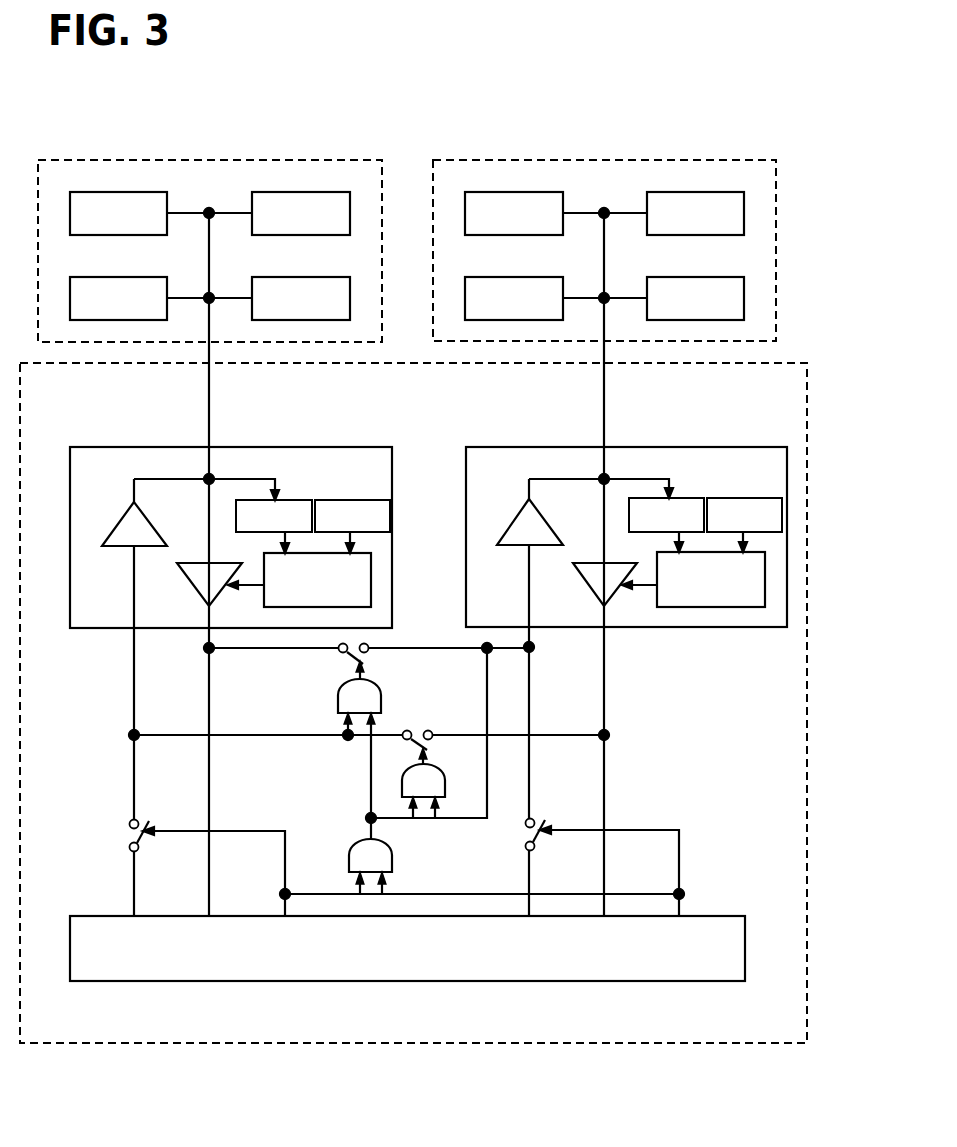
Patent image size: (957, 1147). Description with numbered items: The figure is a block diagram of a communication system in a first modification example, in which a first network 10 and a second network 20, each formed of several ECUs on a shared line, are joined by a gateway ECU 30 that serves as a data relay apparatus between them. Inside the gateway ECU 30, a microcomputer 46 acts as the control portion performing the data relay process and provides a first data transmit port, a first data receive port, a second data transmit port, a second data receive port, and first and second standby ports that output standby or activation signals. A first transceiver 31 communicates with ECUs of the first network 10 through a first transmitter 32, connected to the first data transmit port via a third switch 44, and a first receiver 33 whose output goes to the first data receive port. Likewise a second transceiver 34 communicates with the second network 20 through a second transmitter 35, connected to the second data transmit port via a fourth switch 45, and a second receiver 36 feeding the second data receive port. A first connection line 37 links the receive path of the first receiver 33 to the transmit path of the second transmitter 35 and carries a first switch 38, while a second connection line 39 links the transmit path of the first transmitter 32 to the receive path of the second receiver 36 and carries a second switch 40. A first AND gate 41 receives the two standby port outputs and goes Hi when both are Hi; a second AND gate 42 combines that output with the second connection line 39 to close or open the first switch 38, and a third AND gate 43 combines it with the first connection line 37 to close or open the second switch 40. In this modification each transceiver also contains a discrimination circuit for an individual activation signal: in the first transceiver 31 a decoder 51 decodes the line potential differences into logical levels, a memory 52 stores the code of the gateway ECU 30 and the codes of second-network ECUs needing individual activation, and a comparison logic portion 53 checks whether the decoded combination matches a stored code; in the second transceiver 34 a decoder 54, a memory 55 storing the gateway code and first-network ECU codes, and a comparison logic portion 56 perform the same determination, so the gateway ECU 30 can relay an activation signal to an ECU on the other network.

The first network 10 is at (360, 160).
The second network 20 is at (755, 160).
The gateway ECU 30 is at (807, 400).
The first transceiver 31 is at (250, 447).
The first transmitter 32 is at (152, 520).
The first receiver 33 is at (185, 580).
The second transceiver 34 is at (643, 447).
The second transmitter 35 is at (546, 518).
The second receiver 36 is at (580, 580).
The first connection line 37 is at (285, 650).
The first switch 38 is at (341, 655).
The second connection line 39 is at (235, 735).
The second switch 40 is at (412, 728).
The first AND gate 41 is at (392, 860).
The second AND gate 42 is at (382, 690).
The third AND gate 43 is at (402, 782).
The third switch 44 is at (130, 845).
The fourth switch 45 is at (535, 848).
The microcomputer 46 is at (720, 913).
The decoder 51 is at (283, 497).
The memory 52 is at (338, 497).
The comparison logic portion 53 is at (372, 580).
The decoder 54 is at (678, 497).
The memory 55 is at (733, 497).
The comparison logic portion 56 is at (765, 580).